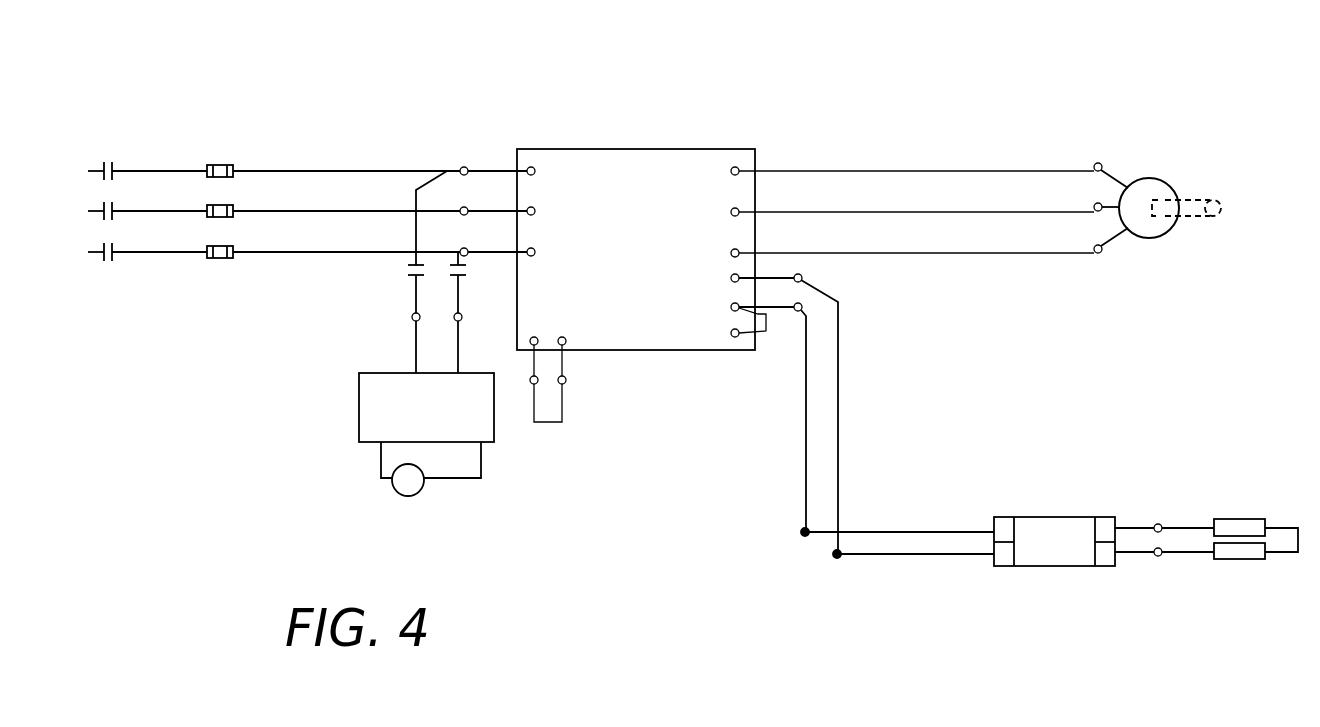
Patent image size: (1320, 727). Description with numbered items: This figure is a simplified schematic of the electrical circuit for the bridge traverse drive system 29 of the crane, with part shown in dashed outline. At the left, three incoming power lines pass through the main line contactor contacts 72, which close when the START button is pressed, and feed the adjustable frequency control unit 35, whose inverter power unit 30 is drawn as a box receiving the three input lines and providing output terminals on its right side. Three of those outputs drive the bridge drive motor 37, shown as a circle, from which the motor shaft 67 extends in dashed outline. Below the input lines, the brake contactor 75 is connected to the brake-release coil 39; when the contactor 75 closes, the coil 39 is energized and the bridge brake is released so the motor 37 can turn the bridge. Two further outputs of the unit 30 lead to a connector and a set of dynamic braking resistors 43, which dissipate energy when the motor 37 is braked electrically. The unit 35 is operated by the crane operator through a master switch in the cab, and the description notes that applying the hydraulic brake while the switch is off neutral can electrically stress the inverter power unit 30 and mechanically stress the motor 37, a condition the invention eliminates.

The bridge traverse drive system 29 is at (722, 93).
The inverter power unit 30 is at (652, 351).
The adjustable frequency control unit 35 is at (756, 149).
The main line contactor contacts 72 is at (113, 170).
The brake contactor 75 is at (410, 277).
The brake-release coil 39 is at (418, 490).
The bridge drive motor 37 is at (1150, 178).
The motor shaft 67 is at (1198, 197).
The dynamic braking resistors 43 is at (1237, 518).